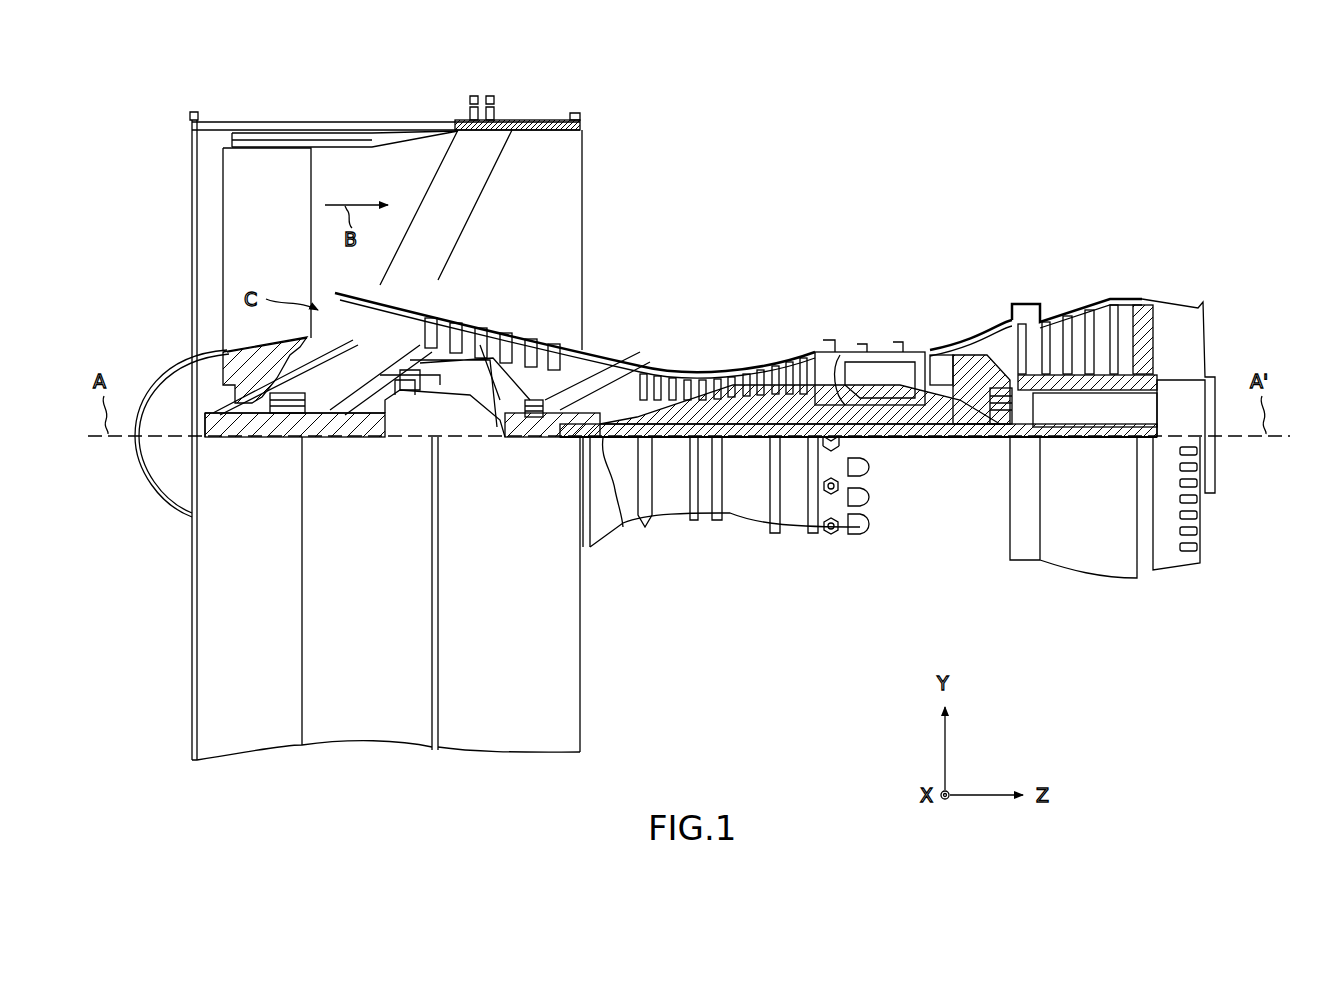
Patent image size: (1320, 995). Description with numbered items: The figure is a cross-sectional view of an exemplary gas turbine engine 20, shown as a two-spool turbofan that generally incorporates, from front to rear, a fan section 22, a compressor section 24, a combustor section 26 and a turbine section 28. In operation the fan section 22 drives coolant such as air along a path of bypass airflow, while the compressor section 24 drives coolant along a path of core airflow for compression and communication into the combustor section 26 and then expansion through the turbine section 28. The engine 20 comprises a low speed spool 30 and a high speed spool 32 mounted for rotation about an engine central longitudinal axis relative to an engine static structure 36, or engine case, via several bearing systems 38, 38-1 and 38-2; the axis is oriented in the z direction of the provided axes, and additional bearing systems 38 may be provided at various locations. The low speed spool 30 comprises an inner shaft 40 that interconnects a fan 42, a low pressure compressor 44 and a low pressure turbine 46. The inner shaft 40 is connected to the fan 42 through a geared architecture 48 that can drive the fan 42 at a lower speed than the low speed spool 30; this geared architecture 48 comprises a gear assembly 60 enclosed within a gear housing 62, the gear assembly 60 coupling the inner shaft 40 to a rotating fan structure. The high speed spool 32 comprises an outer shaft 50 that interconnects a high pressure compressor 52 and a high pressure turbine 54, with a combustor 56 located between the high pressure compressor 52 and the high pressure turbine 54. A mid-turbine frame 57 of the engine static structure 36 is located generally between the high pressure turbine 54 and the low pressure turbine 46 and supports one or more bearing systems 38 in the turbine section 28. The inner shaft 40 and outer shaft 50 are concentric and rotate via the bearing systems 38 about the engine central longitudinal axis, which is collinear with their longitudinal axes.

The gas turbine engine 20 is at (929, 152).
The fan section 22 is at (430, 105).
The compressor section 24 is at (440, 236).
The combustor section 26 is at (925, 236).
The turbine section 28 is at (1145, 236).
The low speed spool 30 is at (749, 444).
The high speed spool 32 is at (792, 396).
The engine static structure 36 is at (178, 758).
The bearing system 38 is at (980, 440).
The bearing system 38-1 is at (268, 426).
The bearing system 38-2 is at (535, 426).
The inner shaft 40 is at (604, 440).
The fan 42 is at (285, 281).
The low pressure compressor 44 is at (520, 335).
The low pressure turbine 46 is at (1075, 335).
The geared architecture 48 is at (400, 462).
The outer shaft 50 is at (874, 428).
The high pressure compressor 52 is at (733, 396).
The high pressure turbine 54 is at (940, 355).
The combustor 56 is at (868, 372).
The mid-turbine frame 57 is at (975, 352).
The gear assembly 60 is at (420, 420).
The gear housing 62 is at (408, 389).